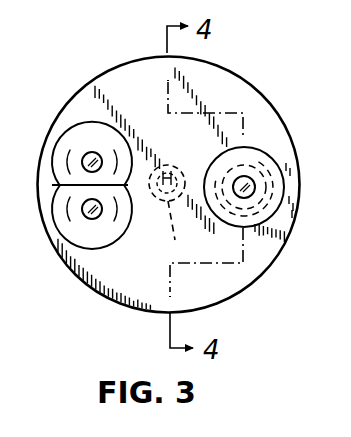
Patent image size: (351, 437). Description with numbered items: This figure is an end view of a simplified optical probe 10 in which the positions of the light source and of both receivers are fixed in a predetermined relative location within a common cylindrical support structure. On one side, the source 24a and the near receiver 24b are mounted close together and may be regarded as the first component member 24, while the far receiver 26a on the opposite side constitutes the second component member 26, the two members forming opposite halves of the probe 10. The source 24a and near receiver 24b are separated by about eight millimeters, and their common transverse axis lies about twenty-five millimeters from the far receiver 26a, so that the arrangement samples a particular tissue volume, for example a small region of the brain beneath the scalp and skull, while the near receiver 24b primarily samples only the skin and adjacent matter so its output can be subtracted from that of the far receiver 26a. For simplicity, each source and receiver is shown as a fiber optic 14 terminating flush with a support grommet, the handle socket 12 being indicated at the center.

The probe 10 is at (122, 54).
The handle socket 12 is at (159, 215).
The fiber optic 14 is at (175, 218).
The first component member 24 is at (47, 181).
The source 24a is at (79, 229).
The near receiver 24b is at (96, 140).
The second component member 26 is at (277, 149).
The far receiver 26a is at (258, 183).